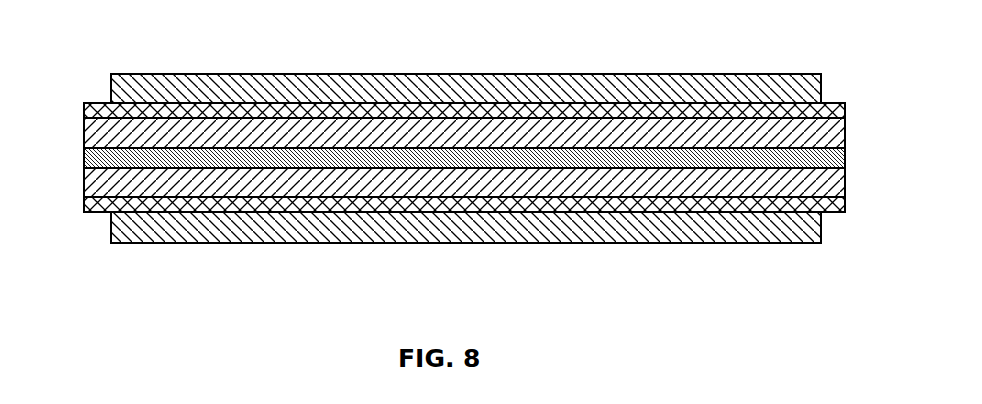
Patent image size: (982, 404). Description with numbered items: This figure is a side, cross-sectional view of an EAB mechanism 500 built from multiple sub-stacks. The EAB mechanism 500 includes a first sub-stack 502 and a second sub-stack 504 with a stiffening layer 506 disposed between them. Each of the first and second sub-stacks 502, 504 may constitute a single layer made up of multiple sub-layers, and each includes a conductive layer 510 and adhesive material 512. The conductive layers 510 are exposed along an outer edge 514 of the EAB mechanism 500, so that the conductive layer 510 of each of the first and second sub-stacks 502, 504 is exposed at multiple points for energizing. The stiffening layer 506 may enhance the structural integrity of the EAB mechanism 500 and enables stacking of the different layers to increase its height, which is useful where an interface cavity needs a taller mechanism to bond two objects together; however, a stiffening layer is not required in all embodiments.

The EAB mechanism 500 is at (466, 151).
The first sub-stack 502 is at (838, 103).
The second sub-stack 504 is at (843, 232).
The stiffening layer 506 is at (84, 160).
The conductive layer 510 is at (352, 163).
The adhesive material 512 is at (633, 208).
The outer edge 514 is at (425, 196).